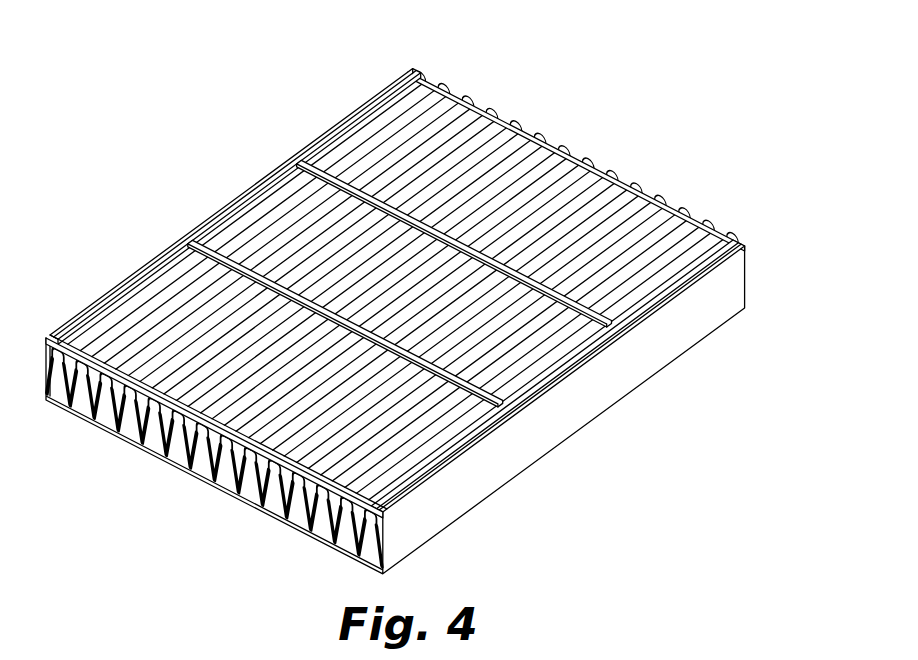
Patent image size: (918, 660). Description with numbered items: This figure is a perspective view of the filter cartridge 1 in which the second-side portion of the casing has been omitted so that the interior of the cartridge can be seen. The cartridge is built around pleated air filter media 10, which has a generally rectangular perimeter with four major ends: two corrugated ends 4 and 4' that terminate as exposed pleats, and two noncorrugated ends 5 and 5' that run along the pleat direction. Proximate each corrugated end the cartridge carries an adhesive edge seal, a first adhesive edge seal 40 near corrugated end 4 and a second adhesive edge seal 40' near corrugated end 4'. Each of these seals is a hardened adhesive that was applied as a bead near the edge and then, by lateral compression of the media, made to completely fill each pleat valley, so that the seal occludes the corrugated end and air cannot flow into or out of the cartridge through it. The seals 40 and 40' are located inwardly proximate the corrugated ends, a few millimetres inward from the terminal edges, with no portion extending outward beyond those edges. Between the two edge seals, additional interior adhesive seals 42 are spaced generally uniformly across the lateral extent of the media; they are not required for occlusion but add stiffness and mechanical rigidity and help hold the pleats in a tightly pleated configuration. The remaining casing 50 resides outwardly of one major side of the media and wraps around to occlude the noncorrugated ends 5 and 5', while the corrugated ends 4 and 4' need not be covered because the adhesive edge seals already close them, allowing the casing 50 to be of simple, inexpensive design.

The filter cartridge 1 is at (393, 301).
The first corrugated end 4 is at (214, 455).
The second corrugated end 4' is at (576, 156).
The first noncorrugated end 5 is at (235, 207).
The second noncorrugated end 5' is at (557, 376).
The pleated air filter media 10 is at (150, 297).
The first adhesive edge seal 40 is at (214, 393).
The second adhesive edge seal 40' is at (559, 140).
The interior adhesive seals 42 is at (294, 158).
The casing 50 is at (527, 452).